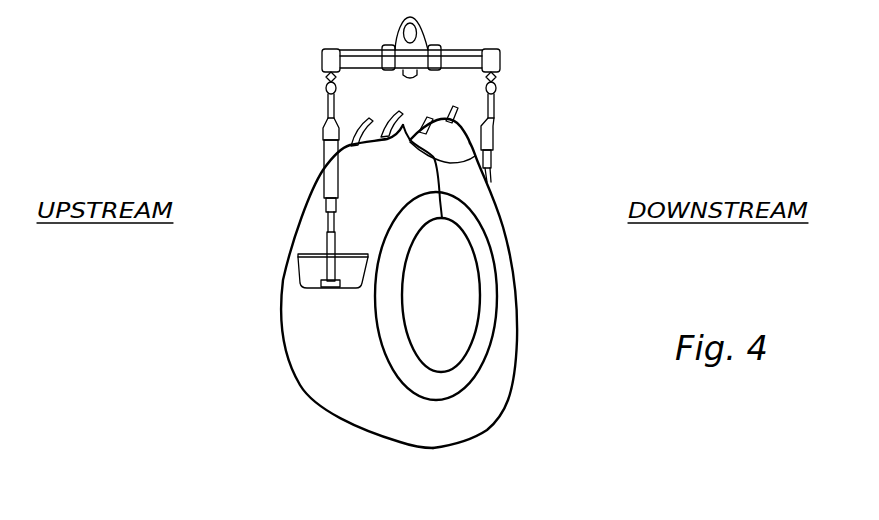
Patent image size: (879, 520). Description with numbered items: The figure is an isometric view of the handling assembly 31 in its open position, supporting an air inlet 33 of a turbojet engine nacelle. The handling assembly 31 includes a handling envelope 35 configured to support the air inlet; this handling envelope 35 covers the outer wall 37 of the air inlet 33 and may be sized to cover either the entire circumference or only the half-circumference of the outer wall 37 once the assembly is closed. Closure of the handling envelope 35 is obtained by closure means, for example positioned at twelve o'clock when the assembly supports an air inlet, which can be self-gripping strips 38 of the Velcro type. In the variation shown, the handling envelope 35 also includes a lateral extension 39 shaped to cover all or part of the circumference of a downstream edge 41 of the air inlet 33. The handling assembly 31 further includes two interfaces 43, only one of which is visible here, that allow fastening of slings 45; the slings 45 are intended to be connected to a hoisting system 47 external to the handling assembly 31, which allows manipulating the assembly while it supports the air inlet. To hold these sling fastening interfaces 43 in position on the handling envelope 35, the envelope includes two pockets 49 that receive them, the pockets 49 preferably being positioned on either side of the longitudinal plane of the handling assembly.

The handling assembly 31 is at (345, 385).
The air inlet 33 is at (451, 157).
The handling envelope 35 is at (392, 410).
The outer wall 37 is at (450, 173).
The self-gripping strips 38 is at (397, 112).
The lateral extension 39 is at (495, 326).
The downstream edge 41 is at (474, 330).
The interface 43 is at (308, 258).
The slings 45 is at (327, 166).
The hoisting system 47 is at (427, 23).
The pockets 49 is at (310, 292).